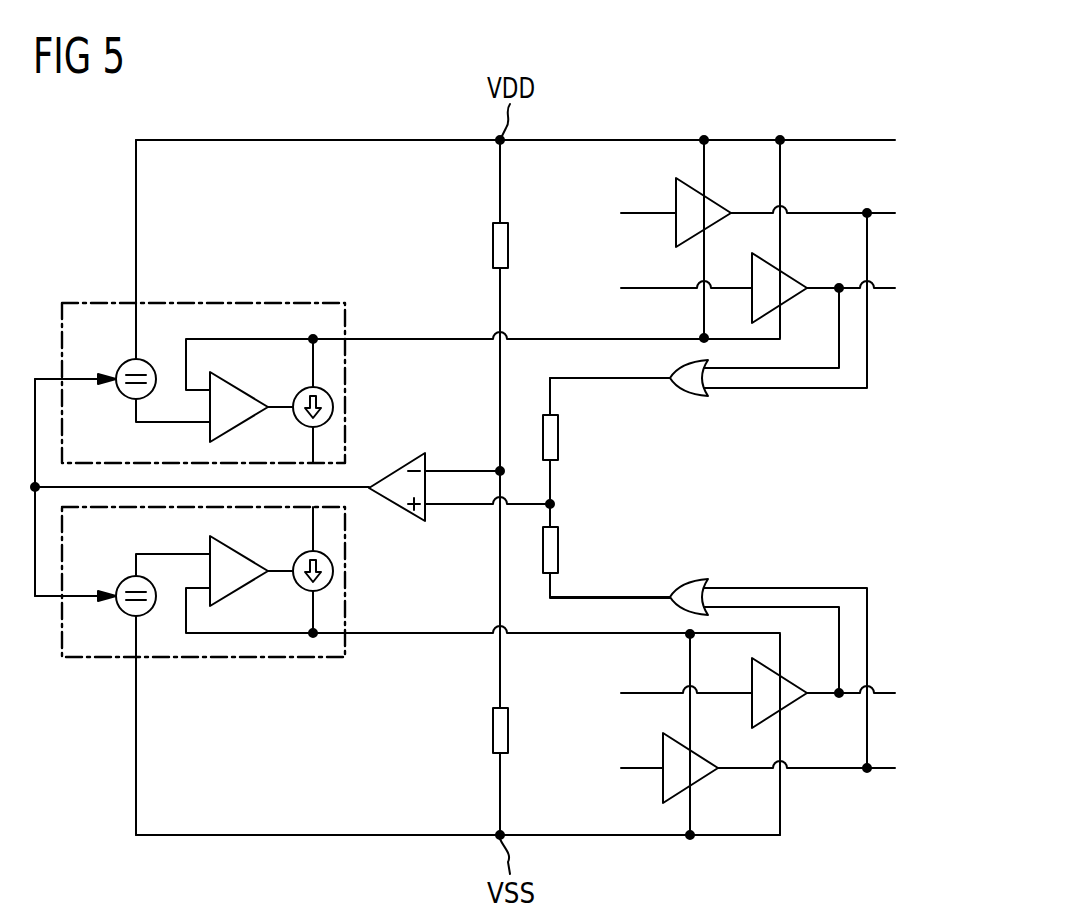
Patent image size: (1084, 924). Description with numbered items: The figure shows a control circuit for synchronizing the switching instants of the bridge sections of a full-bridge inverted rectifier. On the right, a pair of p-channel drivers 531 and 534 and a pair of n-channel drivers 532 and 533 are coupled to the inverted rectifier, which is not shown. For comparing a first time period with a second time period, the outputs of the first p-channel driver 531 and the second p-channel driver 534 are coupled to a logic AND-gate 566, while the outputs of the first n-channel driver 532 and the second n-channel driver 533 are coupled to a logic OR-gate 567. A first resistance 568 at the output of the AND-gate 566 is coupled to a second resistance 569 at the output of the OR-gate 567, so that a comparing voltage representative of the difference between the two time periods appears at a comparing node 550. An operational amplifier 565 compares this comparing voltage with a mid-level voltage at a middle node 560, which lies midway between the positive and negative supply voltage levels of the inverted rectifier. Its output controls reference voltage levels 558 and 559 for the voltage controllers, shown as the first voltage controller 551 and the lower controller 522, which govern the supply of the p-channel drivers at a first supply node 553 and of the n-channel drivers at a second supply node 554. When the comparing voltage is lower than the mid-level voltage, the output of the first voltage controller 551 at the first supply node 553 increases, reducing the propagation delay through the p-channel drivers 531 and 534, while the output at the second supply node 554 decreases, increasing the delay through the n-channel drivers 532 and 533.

The current sink unit 522 is at (207, 658).
The first p-channel driver 531 is at (720, 200).
The first n-channel driver 532 is at (660, 752).
The second n-channel driver 533 is at (790, 708).
The second p-channel driver 534 is at (795, 275).
The comparing node 550 is at (554, 504).
The first voltage controller 551 is at (203, 302).
The first supply node 553 is at (701, 335).
The second supply node 554 is at (688, 637).
The reference voltage level 558 is at (121, 362).
The reference voltage level 559 is at (121, 580).
The middle node 560 is at (498, 468).
The operational amplifier 565 is at (400, 466).
The logic AND-gate 566 is at (689, 398).
The logic OR-gate 567 is at (685, 578).
The first resistance 568 is at (560, 437).
The second resistance 569 is at (560, 545).